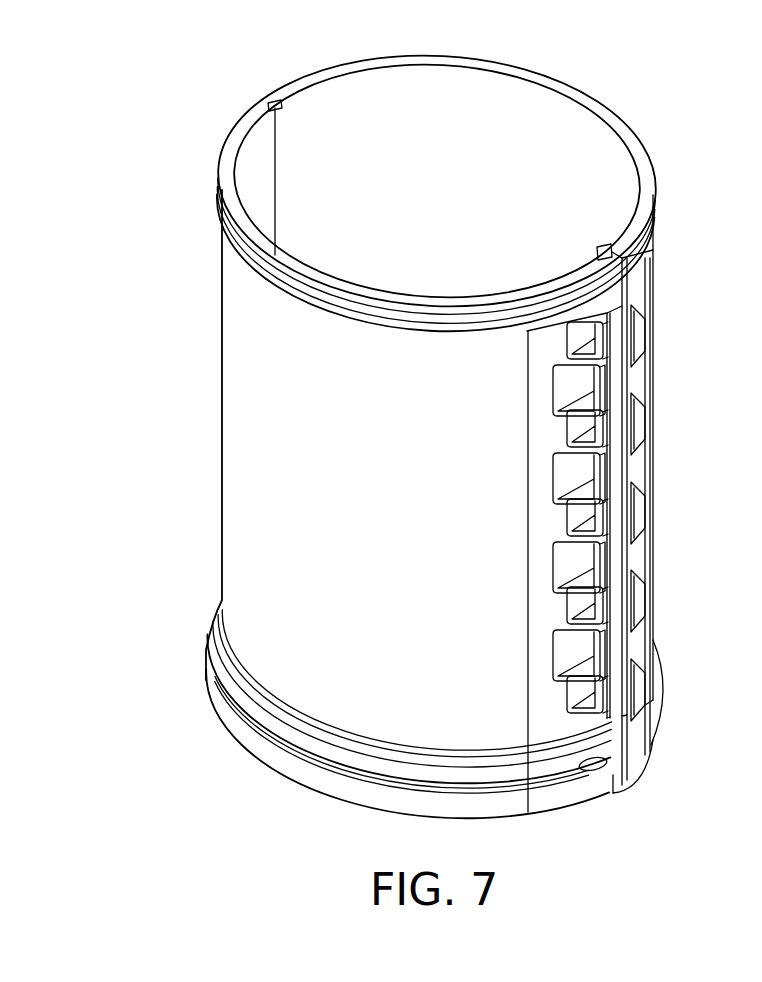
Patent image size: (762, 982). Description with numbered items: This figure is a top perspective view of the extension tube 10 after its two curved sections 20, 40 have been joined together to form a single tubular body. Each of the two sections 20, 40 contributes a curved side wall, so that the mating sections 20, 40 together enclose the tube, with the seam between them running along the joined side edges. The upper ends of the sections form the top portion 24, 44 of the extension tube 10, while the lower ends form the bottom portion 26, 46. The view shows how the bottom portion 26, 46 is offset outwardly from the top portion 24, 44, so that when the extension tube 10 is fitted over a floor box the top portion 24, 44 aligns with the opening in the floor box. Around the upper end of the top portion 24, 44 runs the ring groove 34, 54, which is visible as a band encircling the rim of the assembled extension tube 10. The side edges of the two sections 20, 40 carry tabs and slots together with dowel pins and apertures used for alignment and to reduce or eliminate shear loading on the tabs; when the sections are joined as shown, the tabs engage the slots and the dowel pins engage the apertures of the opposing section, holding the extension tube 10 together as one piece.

The extension tube 10 is at (318, 52).
The curved section 20 is at (268, 473).
The top portion 24 is at (233, 178).
The bottom portion 26 is at (277, 763).
The ring groove 34 is at (290, 288).
The curved section 40 is at (588, 168).
The top portion 44 is at (528, 70).
The bottom portion 46 is at (657, 727).
The dowel pin 54 is at (655, 212).